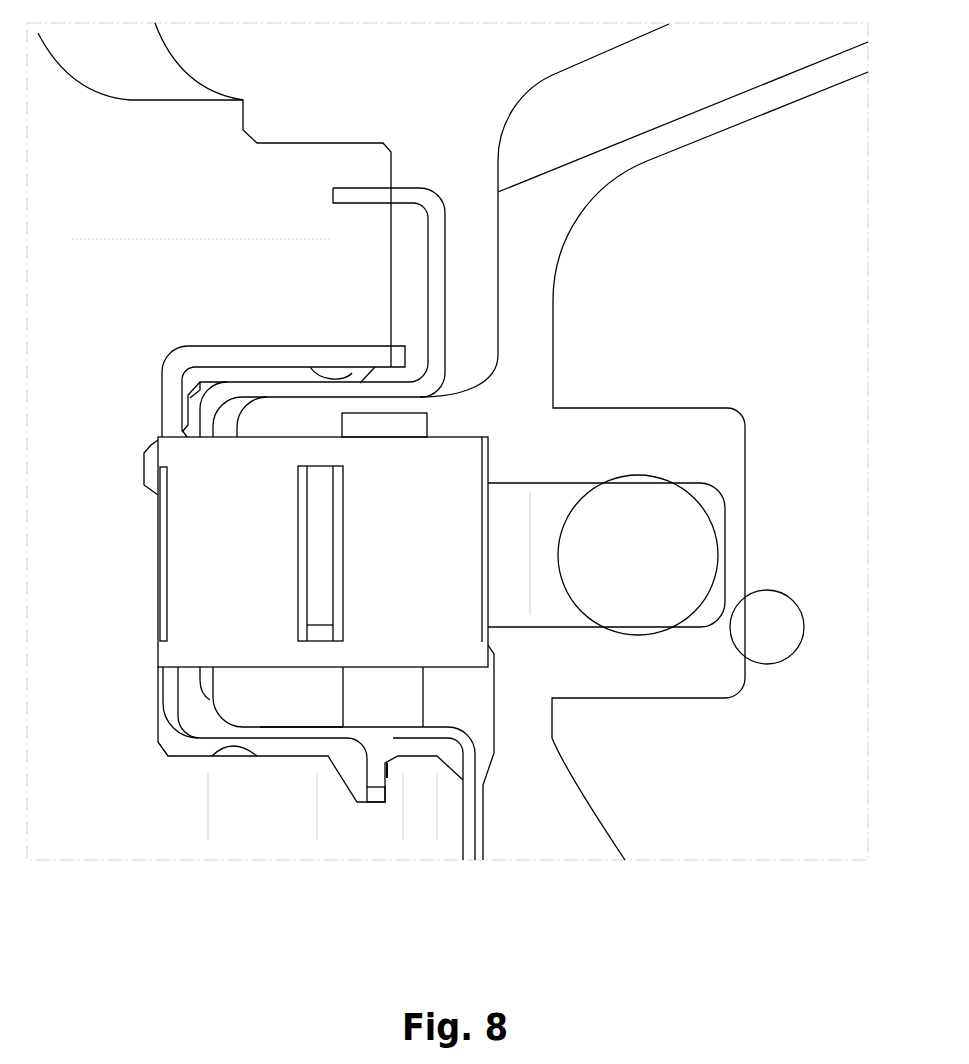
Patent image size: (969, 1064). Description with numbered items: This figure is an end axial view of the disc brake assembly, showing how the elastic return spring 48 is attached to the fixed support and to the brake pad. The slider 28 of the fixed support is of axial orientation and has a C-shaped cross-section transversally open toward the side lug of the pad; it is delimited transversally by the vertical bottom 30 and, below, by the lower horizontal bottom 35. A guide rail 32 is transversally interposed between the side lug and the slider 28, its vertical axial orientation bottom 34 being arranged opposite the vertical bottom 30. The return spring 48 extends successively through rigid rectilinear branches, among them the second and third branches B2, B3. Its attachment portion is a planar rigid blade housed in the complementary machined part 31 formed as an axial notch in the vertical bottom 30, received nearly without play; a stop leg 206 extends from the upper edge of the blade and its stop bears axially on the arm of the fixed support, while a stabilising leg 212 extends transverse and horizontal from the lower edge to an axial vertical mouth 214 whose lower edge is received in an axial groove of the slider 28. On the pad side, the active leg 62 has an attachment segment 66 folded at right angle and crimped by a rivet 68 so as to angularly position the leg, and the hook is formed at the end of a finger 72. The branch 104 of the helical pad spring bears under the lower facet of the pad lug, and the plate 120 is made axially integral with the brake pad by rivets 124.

The slider 28 is at (208, 725).
The vertical bottom 30 is at (200, 383).
The machined part 31 is at (160, 520).
The guide rail 32 is at (292, 375).
The vertical axial orientation bottom 34 is at (203, 688).
The lower horizontal bottom 35 is at (351, 372).
The elastic return spring 48 is at (452, 489).
The active leg 62 is at (568, 495).
The attachment segment 66 is at (568, 612).
The rivet 68 is at (685, 537).
The finger 72 is at (513, 593).
The branch 104 is at (342, 330).
The plate 120 is at (796, 254).
The rivets 124 is at (796, 630).
The stop leg 206 is at (230, 357).
The stabilising leg 212 is at (298, 745).
The mouth 214 is at (387, 778).
The second branch B2 is at (295, 577).
The third branch B3 is at (455, 437).